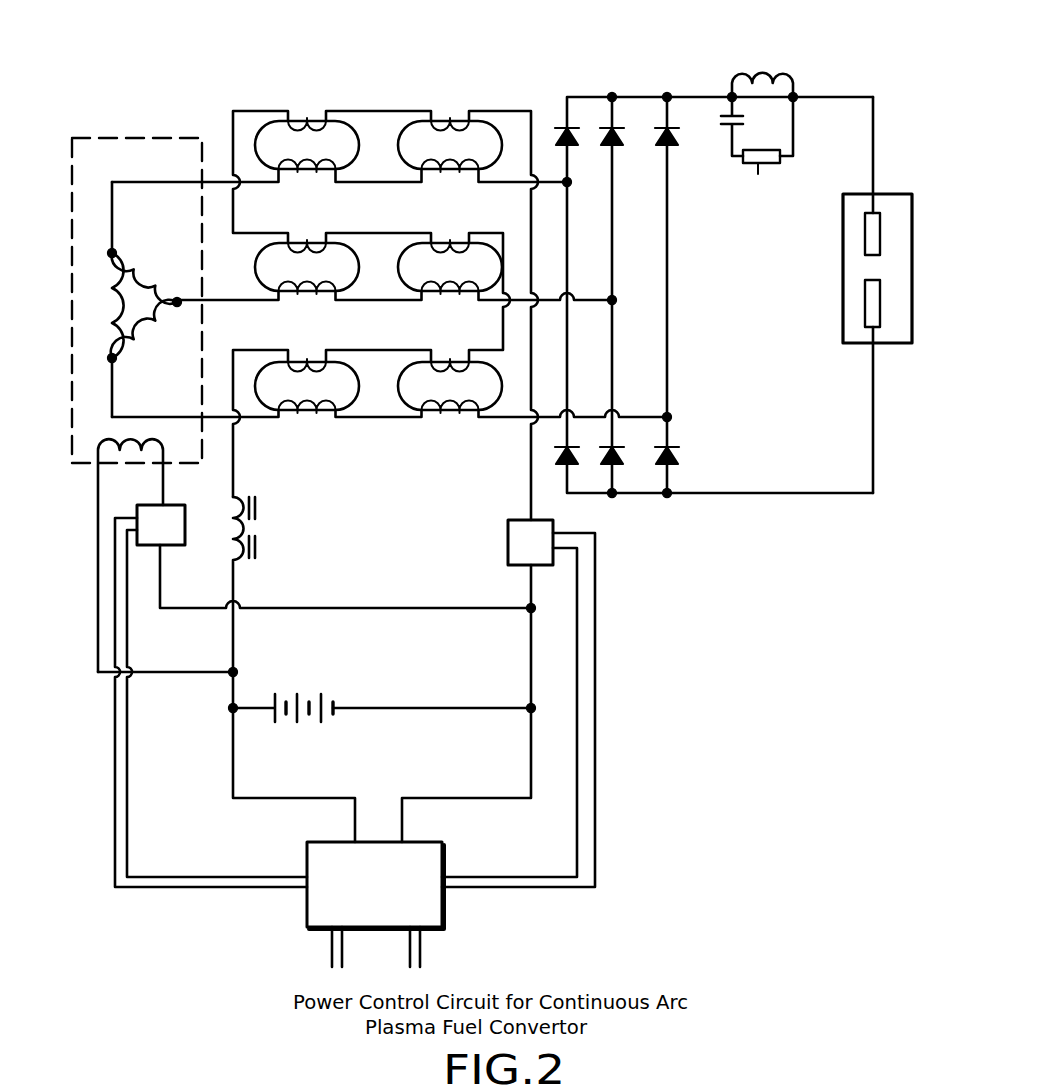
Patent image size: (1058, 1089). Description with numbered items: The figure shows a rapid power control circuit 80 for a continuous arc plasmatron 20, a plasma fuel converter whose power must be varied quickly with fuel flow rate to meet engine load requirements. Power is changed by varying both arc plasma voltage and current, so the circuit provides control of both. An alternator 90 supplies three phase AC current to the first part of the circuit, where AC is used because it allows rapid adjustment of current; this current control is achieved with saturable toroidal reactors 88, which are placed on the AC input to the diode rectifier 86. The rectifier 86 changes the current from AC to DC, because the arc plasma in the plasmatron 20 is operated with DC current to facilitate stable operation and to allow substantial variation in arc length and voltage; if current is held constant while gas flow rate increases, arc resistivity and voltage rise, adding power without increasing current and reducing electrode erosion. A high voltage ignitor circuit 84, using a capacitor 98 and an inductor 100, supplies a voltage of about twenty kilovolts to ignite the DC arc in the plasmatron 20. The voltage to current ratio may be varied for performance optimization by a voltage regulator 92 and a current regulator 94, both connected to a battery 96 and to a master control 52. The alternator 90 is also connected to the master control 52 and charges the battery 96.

The rapid power control circuit 80 is at (700, 911).
The alternator 90 is at (72, 159).
The saturable toroidal reactors 88 is at (403, 71).
The rectifier 86 is at (646, 57).
The high voltage ignitor circuit 84 is at (726, 91).
The inductor 100 is at (770, 71).
The capacitor 98 is at (751, 117).
The plasmatron 20 is at (843, 331).
The voltage regulator 92 is at (154, 504).
The current regulator 94 is at (512, 519).
The battery 96 is at (301, 697).
The master control 52 is at (307, 845).